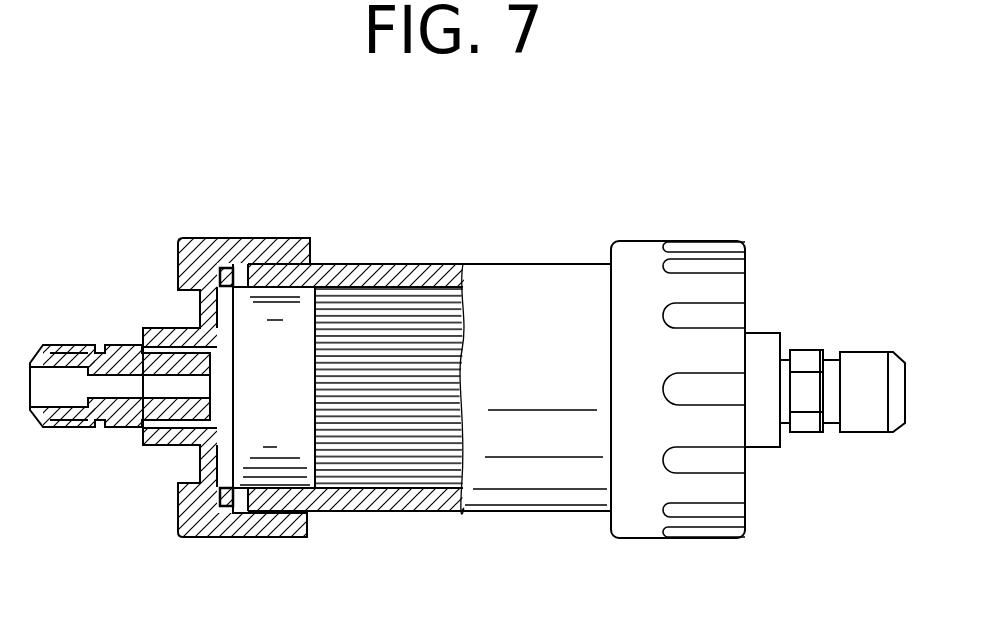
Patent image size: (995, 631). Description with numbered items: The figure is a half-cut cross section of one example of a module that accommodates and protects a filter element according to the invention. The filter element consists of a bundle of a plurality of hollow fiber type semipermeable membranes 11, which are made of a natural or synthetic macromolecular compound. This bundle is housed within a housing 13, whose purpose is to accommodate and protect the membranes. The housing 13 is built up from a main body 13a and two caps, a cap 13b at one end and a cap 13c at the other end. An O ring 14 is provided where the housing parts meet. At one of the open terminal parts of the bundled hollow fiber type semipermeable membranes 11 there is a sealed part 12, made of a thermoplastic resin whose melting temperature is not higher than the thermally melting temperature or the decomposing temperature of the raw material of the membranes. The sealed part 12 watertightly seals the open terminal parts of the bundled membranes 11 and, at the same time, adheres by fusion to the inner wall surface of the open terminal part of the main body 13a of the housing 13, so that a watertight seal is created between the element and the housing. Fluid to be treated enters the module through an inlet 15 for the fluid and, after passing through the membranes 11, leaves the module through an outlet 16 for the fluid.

The hollow fiber type semipermeable membranes 11 is at (400, 337).
The sealed part 12 is at (277, 307).
The housing 13 is at (519, 260).
The main body of the housing 13a is at (373, 505).
The cap for the housing 13b is at (203, 523).
The cap for the housing 13c is at (630, 530).
The O ring 14 is at (229, 268).
The inlet for a fluid 15 is at (858, 420).
The outlet for the fluid 16 is at (123, 425).